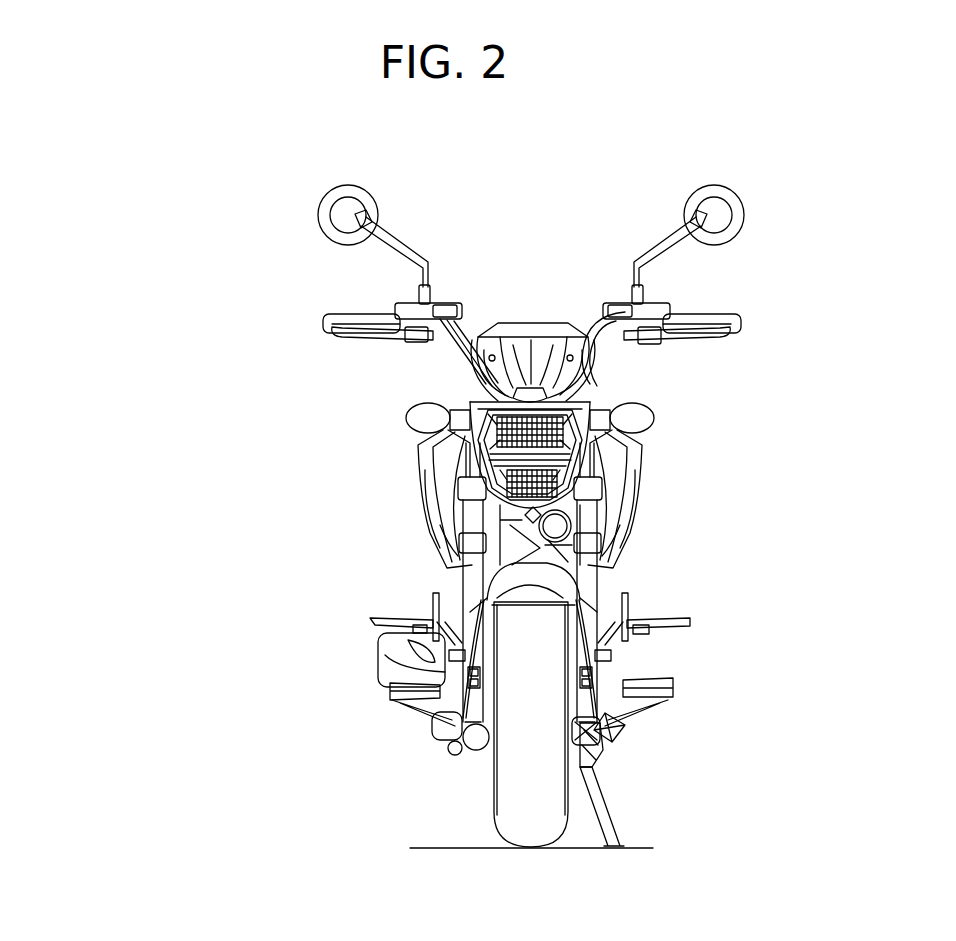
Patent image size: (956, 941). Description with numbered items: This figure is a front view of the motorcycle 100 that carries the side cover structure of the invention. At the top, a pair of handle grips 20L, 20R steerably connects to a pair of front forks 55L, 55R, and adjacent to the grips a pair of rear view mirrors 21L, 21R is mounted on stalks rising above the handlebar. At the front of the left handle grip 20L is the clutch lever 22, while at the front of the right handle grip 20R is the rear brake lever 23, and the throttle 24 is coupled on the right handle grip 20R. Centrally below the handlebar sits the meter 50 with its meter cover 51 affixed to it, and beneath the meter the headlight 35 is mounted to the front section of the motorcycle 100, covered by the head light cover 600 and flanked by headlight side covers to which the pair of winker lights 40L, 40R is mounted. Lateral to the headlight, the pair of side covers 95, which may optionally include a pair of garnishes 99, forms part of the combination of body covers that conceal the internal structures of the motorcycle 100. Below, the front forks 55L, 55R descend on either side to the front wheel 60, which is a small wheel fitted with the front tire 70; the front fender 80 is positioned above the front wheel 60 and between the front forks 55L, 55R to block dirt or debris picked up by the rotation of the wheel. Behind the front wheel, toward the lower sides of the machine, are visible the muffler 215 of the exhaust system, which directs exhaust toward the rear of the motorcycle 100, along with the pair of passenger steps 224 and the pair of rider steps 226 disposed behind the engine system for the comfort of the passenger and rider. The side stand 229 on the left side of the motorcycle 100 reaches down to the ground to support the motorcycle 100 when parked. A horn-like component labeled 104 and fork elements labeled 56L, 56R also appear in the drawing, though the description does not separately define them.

The motorcycle 100 is at (180, 143).
The right rear view mirror 21R is at (348, 183).
The left rear view mirror 21L is at (714, 183).
The right handle grip 20R is at (343, 310).
The left handle grip 20L is at (717, 310).
The throttle 24 is at (318, 325).
The rear brake lever 23 is at (385, 345).
The clutch lever 22 is at (680, 345).
The meter 50 is at (548, 320).
The meter cover 51 is at (517, 330).
The head light cover 600 is at (572, 345).
The headlight 35 is at (600, 455).
The right winker light 40R is at (415, 415).
The left winker light 40L is at (652, 415).
The side covers 95 is at (445, 465).
The garnishes 99 is at (430, 505).
The horn 104 is at (510, 530).
The right front fork 56R is at (470, 555).
The left front fork 56L is at (620, 548).
The front fender 80 is at (560, 575).
The front tire 70 is at (510, 792).
The front wheel 60 is at (590, 790).
The side stand 229 is at (600, 785).
The passenger steps 224 is at (385, 612).
The muffler 215 is at (380, 660).
The rider steps 226 is at (385, 690).
The right front fork 55R is at (435, 728).
The left front fork 55L is at (622, 718).